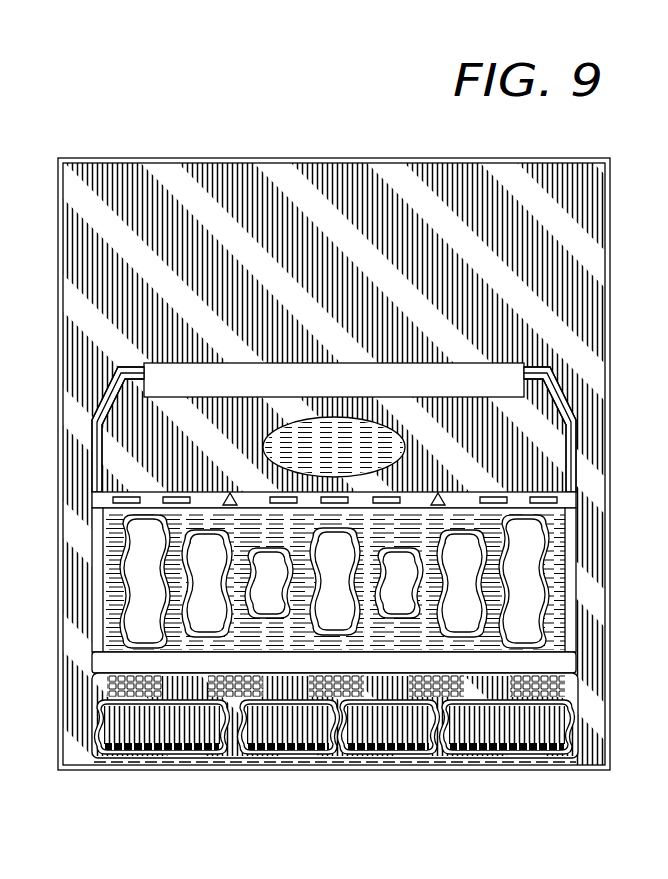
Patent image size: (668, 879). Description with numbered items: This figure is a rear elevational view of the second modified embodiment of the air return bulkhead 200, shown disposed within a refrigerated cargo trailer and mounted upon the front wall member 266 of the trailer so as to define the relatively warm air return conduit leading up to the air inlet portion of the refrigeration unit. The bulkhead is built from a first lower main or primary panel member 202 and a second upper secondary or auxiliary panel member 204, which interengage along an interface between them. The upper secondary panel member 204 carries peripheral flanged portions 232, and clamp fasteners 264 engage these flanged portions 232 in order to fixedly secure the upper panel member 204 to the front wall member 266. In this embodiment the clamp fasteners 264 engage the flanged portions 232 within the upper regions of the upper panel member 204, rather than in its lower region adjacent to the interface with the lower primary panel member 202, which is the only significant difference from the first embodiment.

The air return bulkhead 200 is at (444, 325).
The first lower main or primary panel member 202 is at (410, 642).
The second upper secondary or auxiliary panel member 204 is at (247, 423).
The peripheral flanged portions 232 is at (0, 107).
The clamp fasteners 264 is at (90, 393).
The front wall member 266 is at (229, 293).